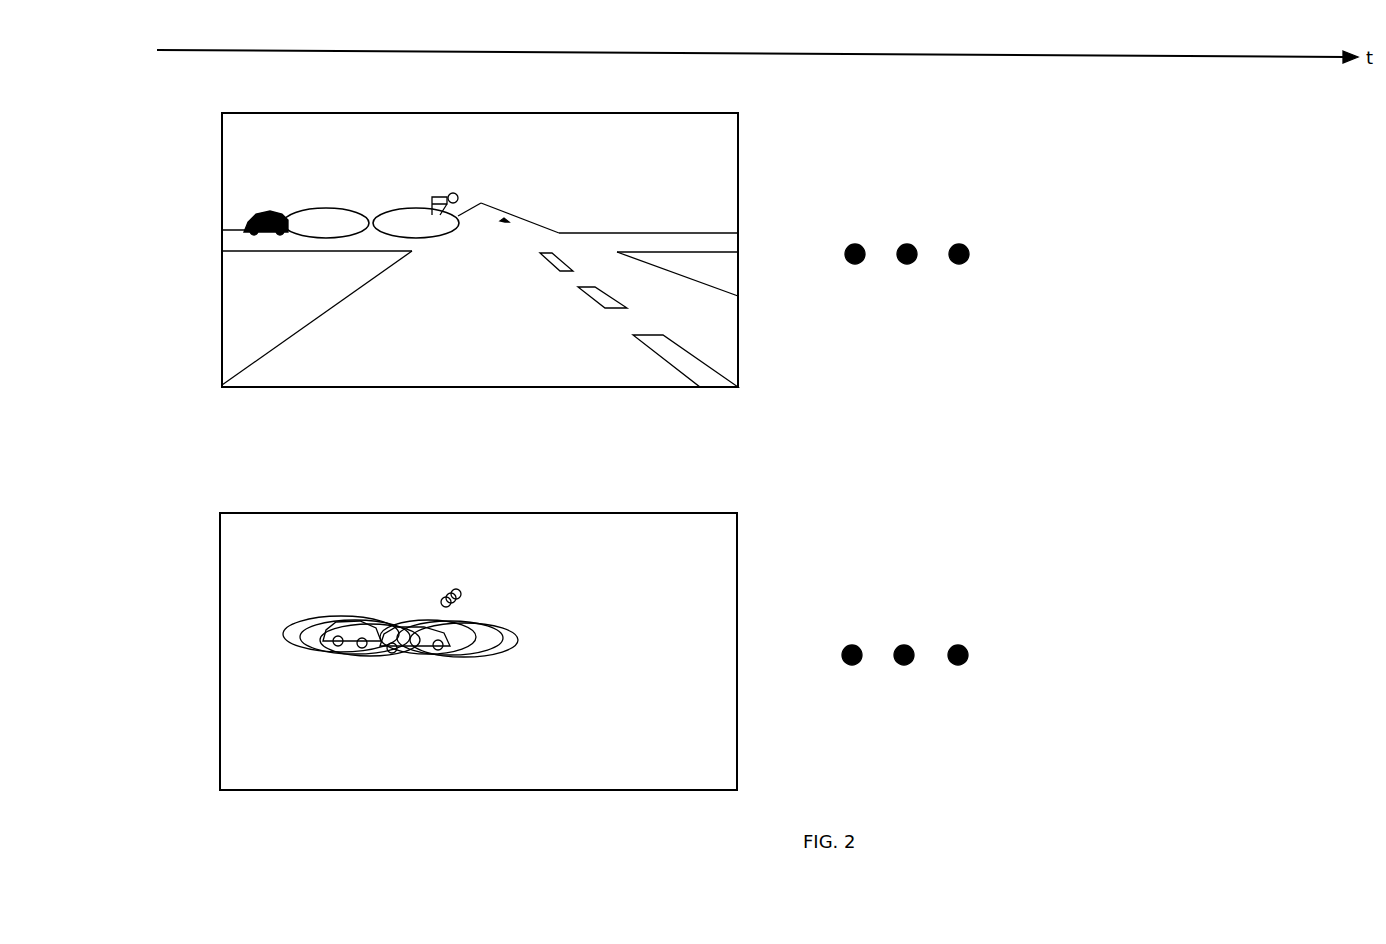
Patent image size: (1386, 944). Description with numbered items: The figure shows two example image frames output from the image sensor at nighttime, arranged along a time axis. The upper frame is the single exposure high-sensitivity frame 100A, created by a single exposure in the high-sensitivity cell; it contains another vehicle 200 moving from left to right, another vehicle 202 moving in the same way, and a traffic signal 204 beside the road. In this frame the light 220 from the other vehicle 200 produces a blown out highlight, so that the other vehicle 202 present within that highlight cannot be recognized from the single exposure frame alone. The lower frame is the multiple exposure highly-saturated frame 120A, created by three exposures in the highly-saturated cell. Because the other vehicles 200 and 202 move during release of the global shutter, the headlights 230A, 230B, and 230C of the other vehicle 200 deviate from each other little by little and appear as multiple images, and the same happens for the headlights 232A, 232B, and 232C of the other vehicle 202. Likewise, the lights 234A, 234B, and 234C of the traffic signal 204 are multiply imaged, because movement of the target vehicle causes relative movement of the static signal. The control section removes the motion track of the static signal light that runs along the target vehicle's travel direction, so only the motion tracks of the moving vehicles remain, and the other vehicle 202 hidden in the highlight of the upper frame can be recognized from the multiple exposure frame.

The single exposure high-sensitivity frame 100A is at (285, 113).
The multiple exposure highly-saturated frame 120A is at (287, 513).
The other vehicle 200 is at (281, 210).
The other vehicle 202 is at (362, 207).
The traffic signal 204 is at (450, 195).
The light 220 is at (322, 208).
The headlight 230A is at (292, 655).
The headlight 230B is at (325, 655).
The headlight 230C is at (360, 658).
The headlight 232A is at (412, 658).
The headlight 232B is at (438, 660).
The headlight 232C is at (470, 660).
The light of traffic signal 234A is at (460, 592).
The light of traffic signal 234B is at (450, 594).
The light of traffic signal 234C is at (444, 598).